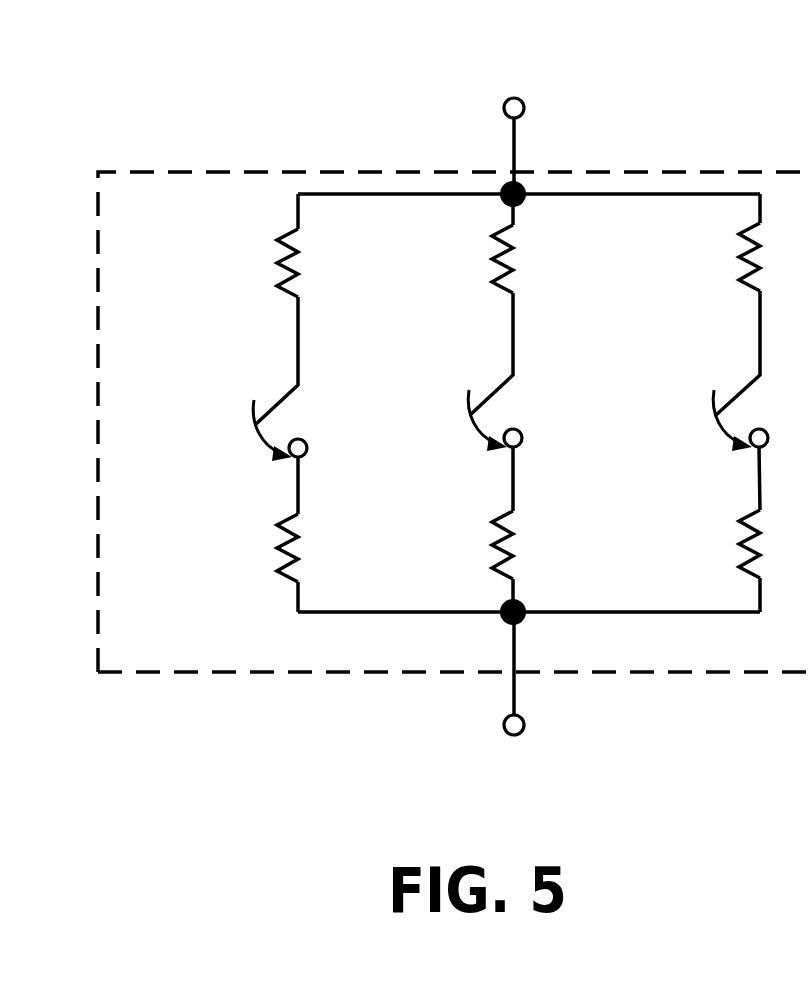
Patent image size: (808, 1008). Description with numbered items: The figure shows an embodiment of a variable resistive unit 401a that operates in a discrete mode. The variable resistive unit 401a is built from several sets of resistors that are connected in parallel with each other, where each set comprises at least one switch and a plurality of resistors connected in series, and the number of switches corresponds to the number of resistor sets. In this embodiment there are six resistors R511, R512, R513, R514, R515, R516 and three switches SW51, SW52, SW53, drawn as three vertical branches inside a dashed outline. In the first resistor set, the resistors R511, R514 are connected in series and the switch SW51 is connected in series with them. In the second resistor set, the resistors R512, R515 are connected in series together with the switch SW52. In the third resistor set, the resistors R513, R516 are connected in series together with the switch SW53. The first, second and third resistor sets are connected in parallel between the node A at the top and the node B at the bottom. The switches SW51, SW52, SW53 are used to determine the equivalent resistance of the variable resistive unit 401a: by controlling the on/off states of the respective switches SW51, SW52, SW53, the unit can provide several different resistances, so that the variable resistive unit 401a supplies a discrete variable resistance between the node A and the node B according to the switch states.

The variable resistive unit 401a is at (300, 172).
The node A is at (529, 105).
The node B is at (529, 738).
The resistor R511 is at (226, 245).
The resistor R512 is at (441, 243).
The resistor R513 is at (689, 243).
The resistor R514 is at (224, 563).
The resistor R515 is at (443, 561).
The resistor R516 is at (686, 561).
The switch SW51 is at (209, 405).
The switch SW52 is at (422, 402).
The switch SW53 is at (669, 400).